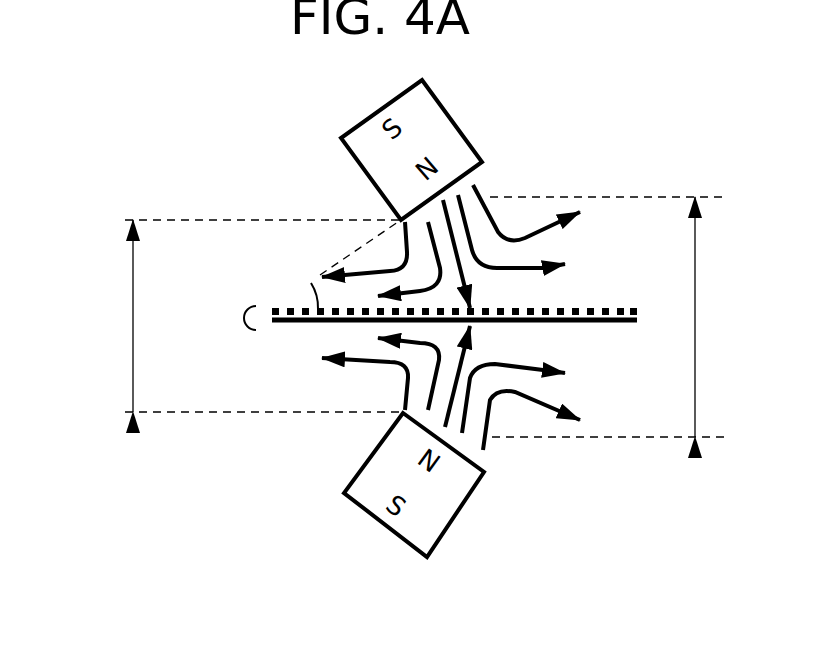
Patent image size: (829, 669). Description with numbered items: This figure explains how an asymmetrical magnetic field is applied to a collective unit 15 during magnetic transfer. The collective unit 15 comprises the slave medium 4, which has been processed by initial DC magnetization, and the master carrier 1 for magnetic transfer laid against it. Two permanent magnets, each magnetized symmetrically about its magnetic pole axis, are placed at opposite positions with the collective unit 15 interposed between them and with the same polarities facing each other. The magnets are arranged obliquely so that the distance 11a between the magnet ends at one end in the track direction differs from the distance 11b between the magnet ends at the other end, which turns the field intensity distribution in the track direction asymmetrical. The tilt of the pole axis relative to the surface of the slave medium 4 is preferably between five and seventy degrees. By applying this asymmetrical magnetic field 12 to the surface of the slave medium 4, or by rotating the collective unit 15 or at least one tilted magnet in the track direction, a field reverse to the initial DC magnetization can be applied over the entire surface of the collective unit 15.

The master carrier for magnetic transfer 1 is at (288, 298).
The slave medium 4 is at (293, 323).
The asymmetrical magnetic field 12 is at (503, 227).
The collective unit 15 is at (241, 318).
The distance between the ends of the permanent magnets at one end in the track direc 11a is at (225, 316).
The distance between the ends of the permanent magnets on the other end in the track 11b is at (632, 317).